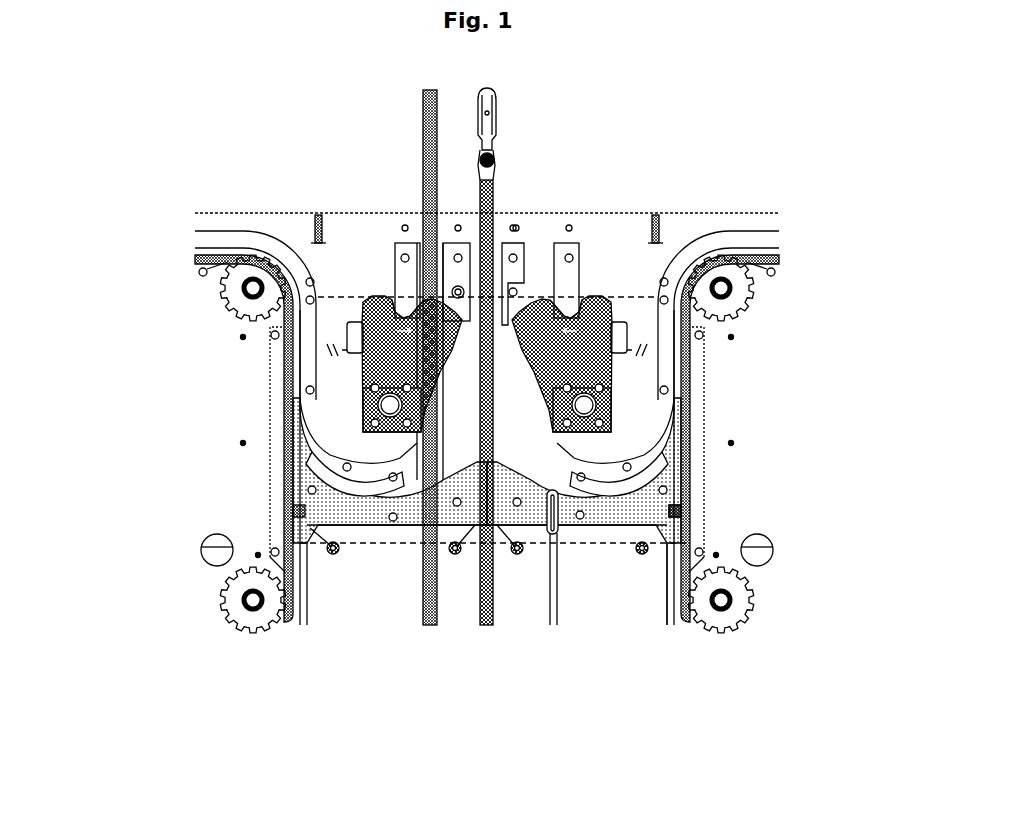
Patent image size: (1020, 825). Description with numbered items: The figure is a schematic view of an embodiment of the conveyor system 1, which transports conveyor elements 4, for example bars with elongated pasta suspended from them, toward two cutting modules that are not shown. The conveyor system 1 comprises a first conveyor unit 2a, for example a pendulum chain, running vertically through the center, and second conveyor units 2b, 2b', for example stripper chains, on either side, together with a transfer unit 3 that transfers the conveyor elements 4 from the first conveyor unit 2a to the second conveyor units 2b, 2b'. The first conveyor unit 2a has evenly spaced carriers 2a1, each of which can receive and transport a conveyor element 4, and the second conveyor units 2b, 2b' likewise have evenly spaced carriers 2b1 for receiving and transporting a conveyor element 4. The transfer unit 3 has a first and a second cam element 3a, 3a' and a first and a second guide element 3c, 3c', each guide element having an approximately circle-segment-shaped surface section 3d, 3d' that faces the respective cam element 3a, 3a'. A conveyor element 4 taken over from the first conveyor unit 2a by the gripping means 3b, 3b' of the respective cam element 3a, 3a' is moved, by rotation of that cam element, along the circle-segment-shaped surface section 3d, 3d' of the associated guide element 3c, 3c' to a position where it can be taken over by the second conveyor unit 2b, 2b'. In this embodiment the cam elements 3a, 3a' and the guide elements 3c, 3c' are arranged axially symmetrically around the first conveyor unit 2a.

The conveyor system 1 is at (135, 318).
The first conveyor unit 2a is at (495, 200).
The carrier 2a1 is at (492, 97).
The conveyor element 4 is at (492, 157).
The second conveyor unit 2b is at (776, 438).
The second conveyor unit 2b' is at (174, 438).
The carrier 2b1 is at (688, 503).
The transfer unit 3 is at (387, 545).
The first cam element 3a is at (700, 364).
The second cam element 3a' is at (250, 364).
The gripping means 3b is at (674, 221).
The gripping means 3b' is at (335, 227).
The first guide element 3c is at (584, 554).
The second guide element 3c' is at (390, 551).
The circle-segment-shaped surface section 3d is at (607, 521).
The circle-segment-shaped surface section 3d' is at (381, 521).